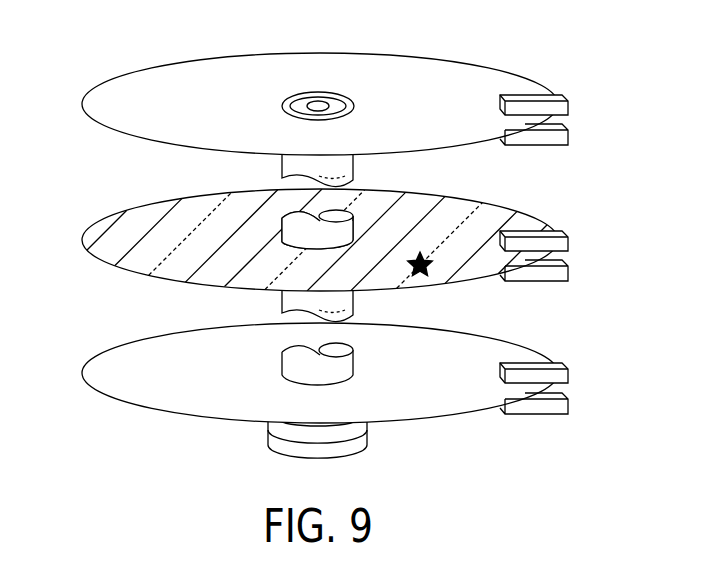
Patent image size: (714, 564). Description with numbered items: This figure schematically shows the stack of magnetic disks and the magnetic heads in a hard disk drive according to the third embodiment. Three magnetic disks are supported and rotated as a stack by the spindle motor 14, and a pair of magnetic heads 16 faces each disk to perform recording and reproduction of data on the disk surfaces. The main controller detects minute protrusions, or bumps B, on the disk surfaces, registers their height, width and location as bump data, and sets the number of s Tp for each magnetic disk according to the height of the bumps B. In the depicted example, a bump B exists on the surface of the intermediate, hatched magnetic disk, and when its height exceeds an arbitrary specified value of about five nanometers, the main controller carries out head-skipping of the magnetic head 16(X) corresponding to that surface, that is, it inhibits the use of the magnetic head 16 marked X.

The spindle motor 14 is at (300, 100).
The magnetic head 16 is at (560, 107).
The number of s (setting per magnetic disk) Tp is at (180, 87).
The head-skipped magnetic head designation X is at (532, 231).
The bump B is at (415, 259).